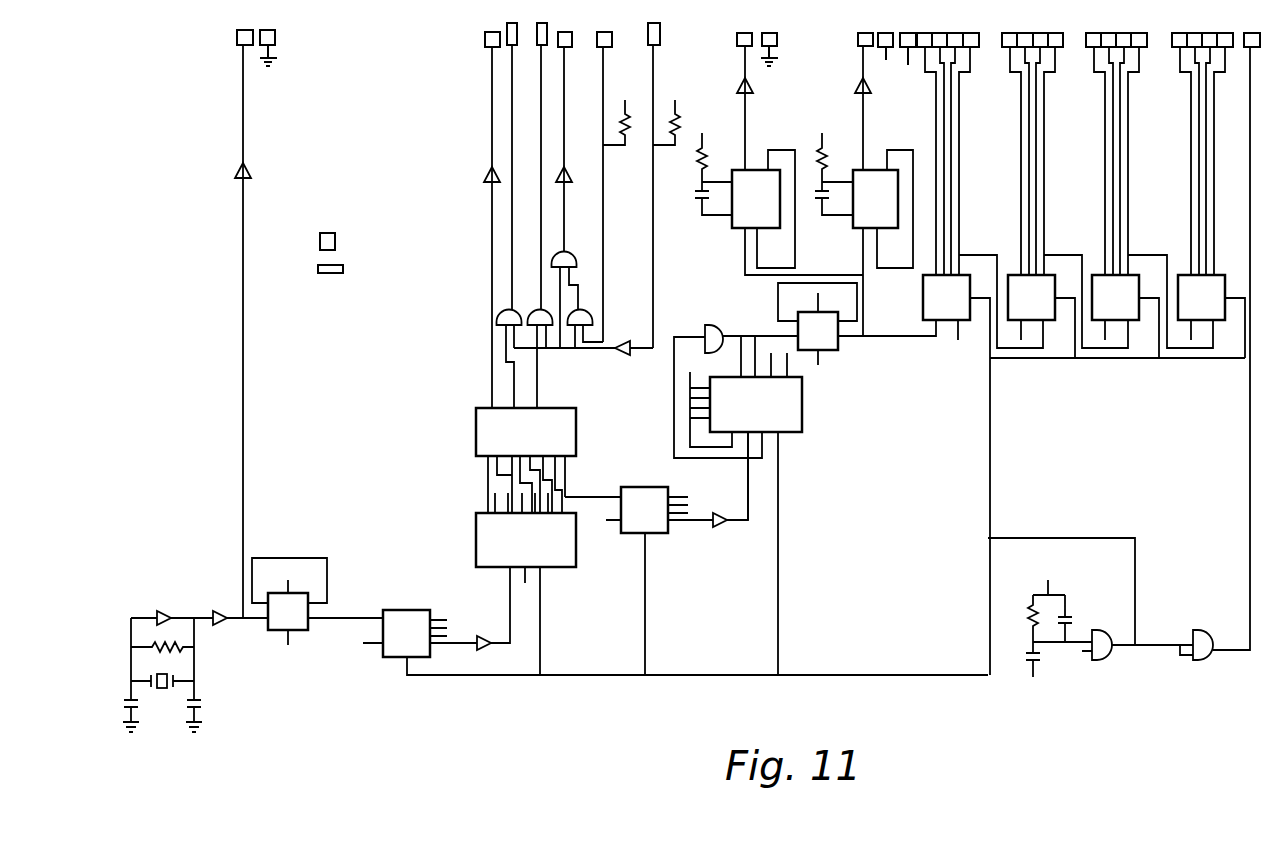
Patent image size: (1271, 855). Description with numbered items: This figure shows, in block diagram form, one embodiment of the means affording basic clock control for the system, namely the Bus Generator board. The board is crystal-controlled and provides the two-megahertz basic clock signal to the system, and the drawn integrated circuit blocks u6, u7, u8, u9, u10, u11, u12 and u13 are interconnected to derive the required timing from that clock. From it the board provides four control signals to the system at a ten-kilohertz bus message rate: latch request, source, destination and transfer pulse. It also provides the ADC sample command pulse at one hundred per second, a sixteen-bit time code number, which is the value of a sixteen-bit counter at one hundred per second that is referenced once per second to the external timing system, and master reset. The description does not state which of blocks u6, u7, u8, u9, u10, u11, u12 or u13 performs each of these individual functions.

The 4013 dual D flip-flop u6 is at (553, 471).
The 4518 dual BCD counter u7 is at (525, 572).
The 4017 decade counter u8 is at (526, 540).
The 4043 quad R/S latch u9 is at (526, 432).
The 4018 presettable divide-by-N counter u10 is at (756, 404).
The 4098 dual monostable multivibrator u11 is at (815, 199).
The 4520 dual binary counter u12 is at (989, 297).
The 4520 dual binary counter u13 is at (1158, 297).